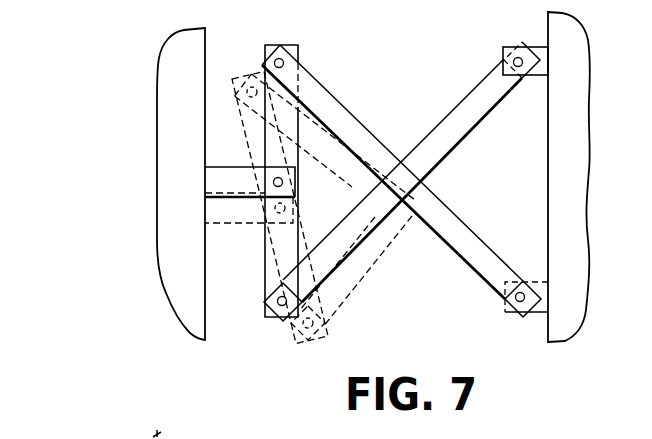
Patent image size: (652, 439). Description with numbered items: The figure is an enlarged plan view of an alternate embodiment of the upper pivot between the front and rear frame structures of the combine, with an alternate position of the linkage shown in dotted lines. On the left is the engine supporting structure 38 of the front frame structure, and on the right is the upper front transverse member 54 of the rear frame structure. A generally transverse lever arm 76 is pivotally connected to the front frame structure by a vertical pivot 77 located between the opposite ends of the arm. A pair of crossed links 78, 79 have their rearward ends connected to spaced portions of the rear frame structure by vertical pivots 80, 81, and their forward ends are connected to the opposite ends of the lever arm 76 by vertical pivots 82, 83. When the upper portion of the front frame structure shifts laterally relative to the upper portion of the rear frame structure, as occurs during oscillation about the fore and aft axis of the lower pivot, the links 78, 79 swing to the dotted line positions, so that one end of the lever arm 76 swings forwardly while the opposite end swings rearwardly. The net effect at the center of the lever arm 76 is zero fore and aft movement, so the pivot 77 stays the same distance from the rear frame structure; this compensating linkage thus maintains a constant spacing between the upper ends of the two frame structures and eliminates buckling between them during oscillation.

The engine supporting structure 38 is at (200, 143).
The upper front transverse member 54 is at (589, 55).
The lever arm 76 is at (247, 119).
The vertical pivot 77 is at (283, 182).
The crossed link 78 is at (352, 118).
The crossed link 79 is at (471, 127).
The vertical pivot 80 is at (517, 304).
The vertical pivot 81 is at (516, 55).
The vertical pivot 82 is at (284, 62).
The vertical pivot 83 is at (281, 307).